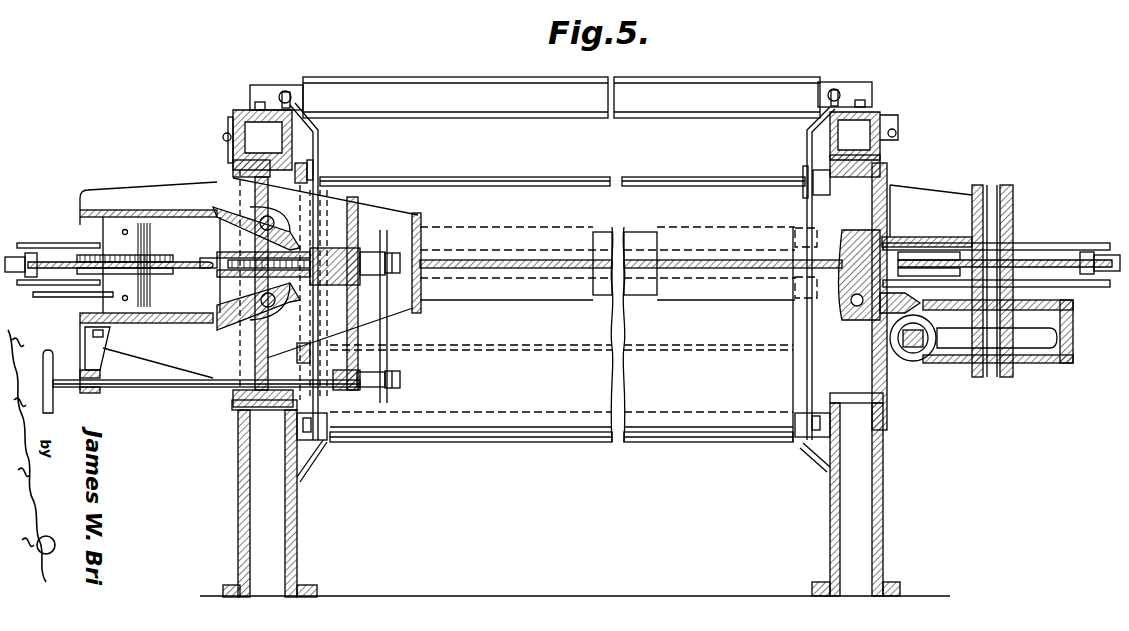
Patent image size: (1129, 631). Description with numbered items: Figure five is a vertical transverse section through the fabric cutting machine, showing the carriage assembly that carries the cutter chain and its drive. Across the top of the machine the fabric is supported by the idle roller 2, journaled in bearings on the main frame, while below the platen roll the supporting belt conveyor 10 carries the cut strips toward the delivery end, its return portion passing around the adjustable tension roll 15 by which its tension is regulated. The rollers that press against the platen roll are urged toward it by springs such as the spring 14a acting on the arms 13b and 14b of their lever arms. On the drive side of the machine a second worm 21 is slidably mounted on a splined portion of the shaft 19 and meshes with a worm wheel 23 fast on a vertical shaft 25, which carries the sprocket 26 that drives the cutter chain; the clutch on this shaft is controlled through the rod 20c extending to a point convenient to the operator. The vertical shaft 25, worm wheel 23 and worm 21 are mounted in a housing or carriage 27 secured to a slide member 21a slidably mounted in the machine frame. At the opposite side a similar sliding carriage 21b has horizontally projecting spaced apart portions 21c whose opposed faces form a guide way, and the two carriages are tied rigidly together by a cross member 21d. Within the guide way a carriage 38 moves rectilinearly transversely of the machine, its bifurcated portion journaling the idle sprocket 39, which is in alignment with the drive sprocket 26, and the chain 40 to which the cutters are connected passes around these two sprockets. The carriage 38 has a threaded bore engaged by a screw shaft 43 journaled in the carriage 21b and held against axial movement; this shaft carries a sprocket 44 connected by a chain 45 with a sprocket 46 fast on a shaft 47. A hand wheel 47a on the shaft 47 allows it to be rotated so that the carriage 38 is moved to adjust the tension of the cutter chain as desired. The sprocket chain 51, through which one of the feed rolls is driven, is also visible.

The idle roller 2 is at (545, 98).
The supporting belt conveyor 10 is at (590, 360).
The adjustable tension roll 15 is at (490, 410).
The arm 13b is at (310, 447).
The spring 14a is at (283, 90).
The arm 14b is at (318, 146).
The shaft 19 is at (927, 357).
The rod 20c is at (224, 135).
The second worm 21 is at (927, 367).
The slide member or carriage 21a is at (887, 176).
The sliding carriage 21b is at (233, 177).
The horizontally projecting spaced apart portions 21c is at (110, 210).
The cross member 21d is at (527, 228).
The worm wheel 23 is at (1053, 338).
The vertical shaft 25 is at (993, 376).
The sprocket 26 is at (1043, 250).
The housing or carriage 27 is at (1073, 362).
The carriage 38 is at (172, 256).
The idle sprocket 39 is at (170, 270).
The chain 40 is at (46, 250).
The screw shaft 43 is at (340, 242).
The sprocket 44 is at (388, 240).
The chain 45 is at (387, 330).
The sprocket 46 is at (387, 400).
The shaft 47 is at (160, 383).
The hand wheel 47a is at (53, 405).
The sprocket chain 51 is at (313, 165).